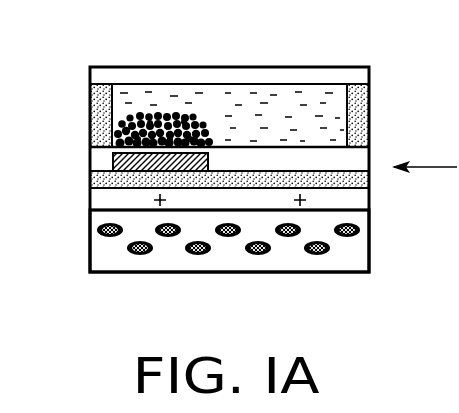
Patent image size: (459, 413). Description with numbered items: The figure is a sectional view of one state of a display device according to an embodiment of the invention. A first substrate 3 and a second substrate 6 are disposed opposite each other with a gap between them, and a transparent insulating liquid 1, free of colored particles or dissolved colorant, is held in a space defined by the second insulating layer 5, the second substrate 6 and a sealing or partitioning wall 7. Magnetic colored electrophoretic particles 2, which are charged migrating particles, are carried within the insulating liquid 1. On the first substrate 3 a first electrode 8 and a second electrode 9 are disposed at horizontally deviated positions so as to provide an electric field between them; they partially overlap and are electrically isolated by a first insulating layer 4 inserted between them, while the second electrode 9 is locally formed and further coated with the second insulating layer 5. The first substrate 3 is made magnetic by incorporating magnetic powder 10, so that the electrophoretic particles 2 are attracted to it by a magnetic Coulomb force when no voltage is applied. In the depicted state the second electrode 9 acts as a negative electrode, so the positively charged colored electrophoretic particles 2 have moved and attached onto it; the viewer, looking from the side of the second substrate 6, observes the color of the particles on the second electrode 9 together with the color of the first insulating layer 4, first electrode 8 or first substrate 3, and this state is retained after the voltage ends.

The insulating liquid 1 is at (128, 106).
The magnetic colored electrophoretic particles 2 is at (143, 118).
The first substrate 3 is at (105, 252).
The first insulating layer 4 is at (357, 178).
The second insulating layer 5 is at (355, 158).
The second substrate 6 is at (290, 77).
The sealing or partitioning wall 7 is at (360, 115).
The first electrode 8 is at (357, 199).
The second electrode 9 is at (128, 162).
The magnetic powder 10 is at (139, 257).